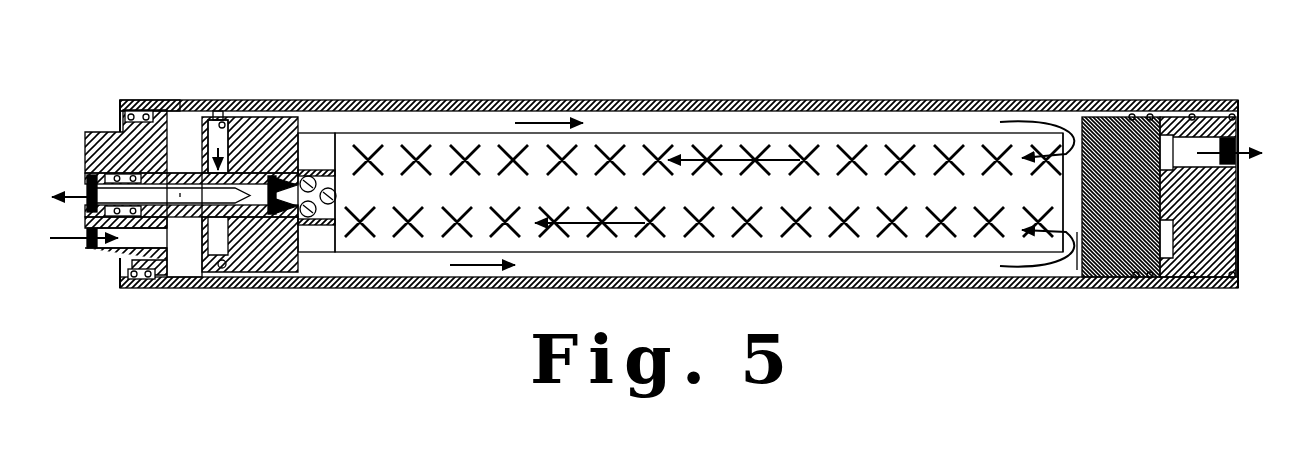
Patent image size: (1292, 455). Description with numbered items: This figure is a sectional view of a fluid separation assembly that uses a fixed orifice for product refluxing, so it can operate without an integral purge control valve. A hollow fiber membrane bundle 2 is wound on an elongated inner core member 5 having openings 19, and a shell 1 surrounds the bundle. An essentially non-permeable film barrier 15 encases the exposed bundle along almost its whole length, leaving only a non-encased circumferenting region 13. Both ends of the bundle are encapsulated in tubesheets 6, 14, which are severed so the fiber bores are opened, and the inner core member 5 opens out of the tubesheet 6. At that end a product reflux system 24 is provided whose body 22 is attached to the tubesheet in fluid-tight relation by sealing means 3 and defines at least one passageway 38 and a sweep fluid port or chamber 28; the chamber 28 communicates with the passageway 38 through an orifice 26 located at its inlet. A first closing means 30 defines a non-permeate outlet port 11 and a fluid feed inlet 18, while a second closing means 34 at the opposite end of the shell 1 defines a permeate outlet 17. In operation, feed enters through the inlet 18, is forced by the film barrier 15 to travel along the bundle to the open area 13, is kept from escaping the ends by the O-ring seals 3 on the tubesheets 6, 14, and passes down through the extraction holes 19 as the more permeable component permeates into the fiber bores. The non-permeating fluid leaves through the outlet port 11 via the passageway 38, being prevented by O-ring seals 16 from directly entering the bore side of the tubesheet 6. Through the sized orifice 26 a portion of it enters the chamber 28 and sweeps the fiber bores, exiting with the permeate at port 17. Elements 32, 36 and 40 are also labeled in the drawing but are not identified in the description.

The shell 1 is at (635, 100).
The hollow fiber membrane bundle 2 is at (852, 160).
The sealing means 3 is at (240, 117).
The inner core member 5 is at (310, 218).
The tubesheet 6 is at (282, 262).
The non-permeate outlet port 11 is at (86, 176).
The non-encased circumferenting region 13 is at (1074, 290).
The tubesheet 14 is at (1117, 245).
The film barrier 15 is at (737, 133).
The O-ring seals 16 is at (289, 117).
The permeate outlet 17 is at (1244, 142).
The fluid feed inlet 18 is at (87, 252).
The openings 19 is at (337, 198).
The body 22 is at (222, 112).
The product reflux system 24 is at (215, 112).
The orifice 26 is at (175, 218).
The sweep fluid port or chamber 28 is at (194, 252).
The first closing means 30 is at (105, 133).
The tube end 32 is at (160, 100).
The second closing means 34 is at (134, 112).
The right end cap 36 is at (1187, 113).
The passageway 38 is at (155, 277).
The end edge 40 is at (1240, 248).